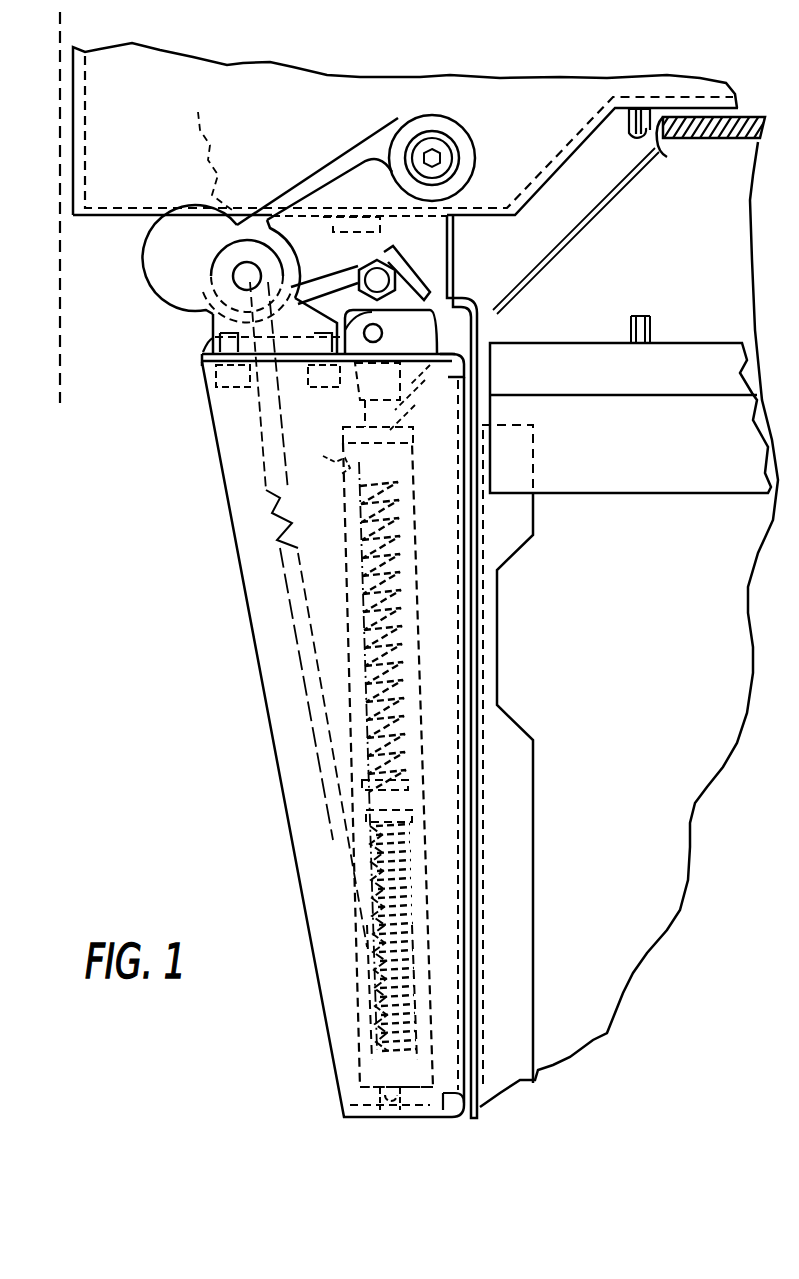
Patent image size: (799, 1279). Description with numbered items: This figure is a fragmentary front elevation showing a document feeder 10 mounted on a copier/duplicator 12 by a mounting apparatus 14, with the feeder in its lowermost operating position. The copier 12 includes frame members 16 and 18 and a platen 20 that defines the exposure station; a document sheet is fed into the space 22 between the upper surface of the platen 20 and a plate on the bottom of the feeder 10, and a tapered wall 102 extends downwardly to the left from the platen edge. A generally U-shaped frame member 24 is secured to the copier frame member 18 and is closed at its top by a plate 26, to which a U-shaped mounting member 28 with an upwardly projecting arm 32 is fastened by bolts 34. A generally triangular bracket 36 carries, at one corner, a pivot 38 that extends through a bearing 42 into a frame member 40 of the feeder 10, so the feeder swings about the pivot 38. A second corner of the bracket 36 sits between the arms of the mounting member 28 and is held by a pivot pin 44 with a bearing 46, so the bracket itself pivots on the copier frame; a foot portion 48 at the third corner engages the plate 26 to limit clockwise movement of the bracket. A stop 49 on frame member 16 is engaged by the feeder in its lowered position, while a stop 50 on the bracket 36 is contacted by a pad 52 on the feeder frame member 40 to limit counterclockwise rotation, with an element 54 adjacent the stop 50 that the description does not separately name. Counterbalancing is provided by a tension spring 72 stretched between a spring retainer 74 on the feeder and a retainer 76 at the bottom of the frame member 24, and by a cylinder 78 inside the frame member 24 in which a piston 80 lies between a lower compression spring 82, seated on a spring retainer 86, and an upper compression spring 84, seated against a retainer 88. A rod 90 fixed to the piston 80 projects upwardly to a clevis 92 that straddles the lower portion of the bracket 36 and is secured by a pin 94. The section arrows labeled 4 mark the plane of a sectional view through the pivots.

The section line 4- 4 is at (52, 22).
The document feeder 10 is at (243, 60).
The copier/duplicator 12 is at (677, 712).
The mounting apparatus 14 is at (164, 541).
The frame member 16 is at (677, 452).
The frame member 18 is at (520, 541).
The platen 20 is at (735, 140).
The space 22 is at (673, 146).
The U-shaped frame member 24 is at (262, 707).
The plate 26 is at (284, 364).
The U-shaped mounting member 28 is at (203, 347).
The arm 32 is at (317, 330).
The bolts 34 is at (228, 390).
The bracket 36 is at (321, 161).
The pivot 38 is at (410, 148).
The frame member 40 is at (124, 218).
The bearing 42 is at (457, 142).
The pivot pin 44 is at (247, 277).
The bearing 46 is at (212, 259).
The foot portion 48 is at (478, 308).
The stop 49 is at (628, 130).
The stop 50 is at (354, 278).
The pad 52 is at (332, 226).
The bolt 54 is at (400, 258).
The tension spring 72 is at (285, 612).
The spring retainer 74 is at (207, 149).
The retainer 76 is at (348, 1105).
The cylinder 78 is at (346, 546).
The piston 80 is at (399, 808).
The lower compression spring 82 is at (425, 940).
The upper compression spring 84 is at (362, 628).
The spring retainer 86 is at (450, 1085).
The retainer 88 is at (334, 470).
The rod 90 is at (344, 430).
The clevis 92 is at (385, 345).
The pin 94 is at (384, 334).
The tapered wall 102 is at (582, 232).